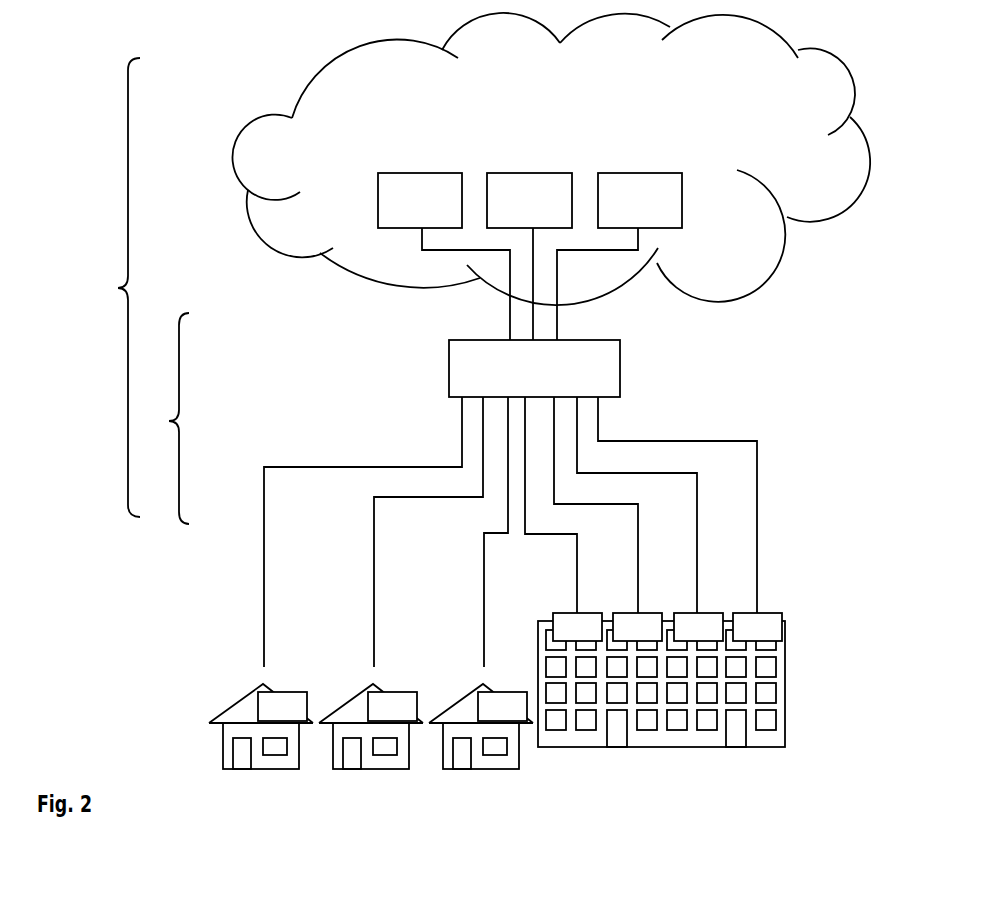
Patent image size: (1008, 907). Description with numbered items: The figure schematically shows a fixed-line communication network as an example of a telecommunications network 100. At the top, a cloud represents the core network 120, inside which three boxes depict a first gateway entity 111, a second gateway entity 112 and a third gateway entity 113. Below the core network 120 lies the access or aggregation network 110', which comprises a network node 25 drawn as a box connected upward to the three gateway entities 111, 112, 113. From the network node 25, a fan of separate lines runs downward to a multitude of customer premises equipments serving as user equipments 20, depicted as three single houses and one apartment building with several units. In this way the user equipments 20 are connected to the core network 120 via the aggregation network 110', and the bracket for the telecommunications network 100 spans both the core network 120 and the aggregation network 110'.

The core network 120 is at (551, 159).
The first gateway entity 111 is at (444, 256).
The second gateway entity 112 is at (529, 256).
The third gateway entity 113 is at (619, 256).
The network node 25 is at (510, 503).
The user equipments 20 is at (497, 691).
The telecommunications network 100 is at (109, 287).
The aggregation network 110' is at (159, 418).